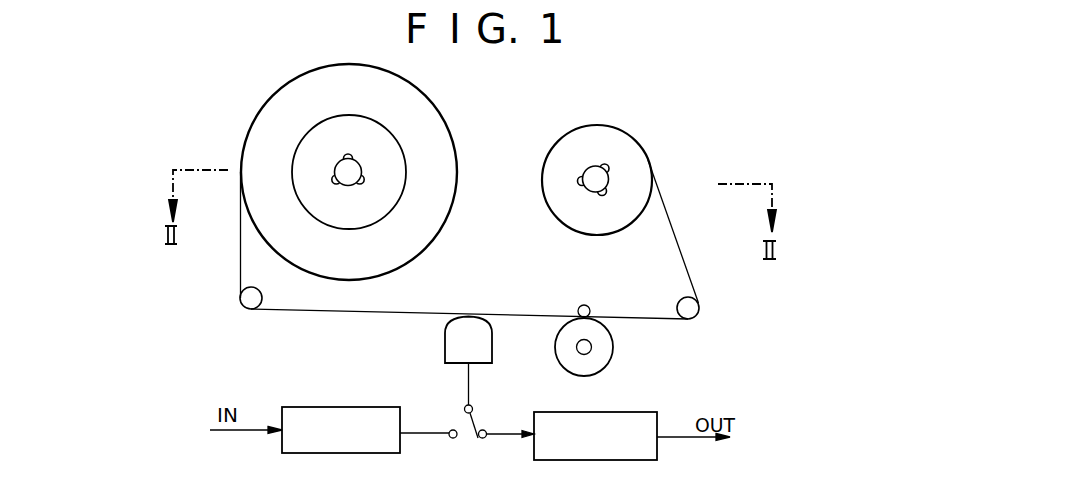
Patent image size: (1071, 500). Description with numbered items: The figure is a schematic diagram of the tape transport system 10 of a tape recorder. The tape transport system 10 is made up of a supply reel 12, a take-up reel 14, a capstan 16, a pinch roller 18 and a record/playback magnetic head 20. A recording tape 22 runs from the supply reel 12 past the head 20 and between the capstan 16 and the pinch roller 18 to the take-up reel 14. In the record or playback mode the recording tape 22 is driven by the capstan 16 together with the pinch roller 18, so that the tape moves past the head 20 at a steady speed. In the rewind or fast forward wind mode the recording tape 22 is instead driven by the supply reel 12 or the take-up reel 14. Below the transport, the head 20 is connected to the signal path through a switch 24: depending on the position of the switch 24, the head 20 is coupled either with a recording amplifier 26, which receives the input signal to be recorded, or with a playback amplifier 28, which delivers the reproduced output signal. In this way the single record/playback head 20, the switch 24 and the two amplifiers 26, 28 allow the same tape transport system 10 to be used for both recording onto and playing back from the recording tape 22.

The tape transport system 10 is at (509, 111).
The supply reel 12 is at (387, 165).
The take-up reel 14 is at (632, 170).
The capstan 16 is at (580, 307).
The pinch roller 18 is at (607, 353).
The record/playback magnetic head 20 is at (445, 342).
The recording tape 22 is at (493, 316).
The switch 24 is at (480, 412).
The recording amplifier 26 is at (341, 406).
The playback amplifier 28 is at (647, 413).